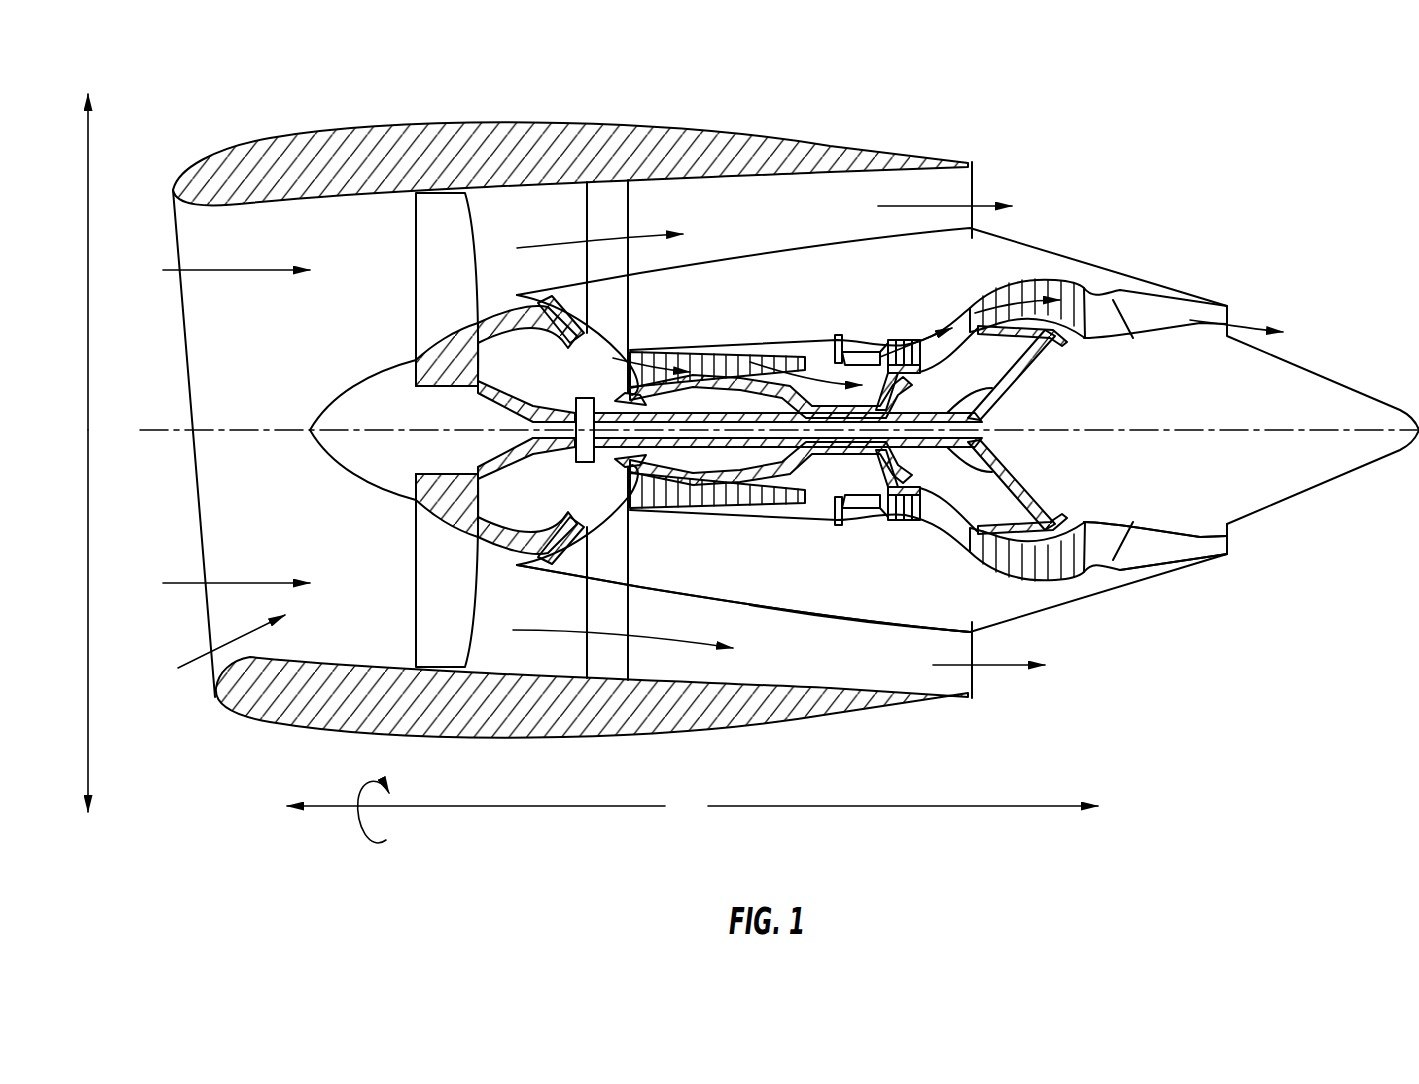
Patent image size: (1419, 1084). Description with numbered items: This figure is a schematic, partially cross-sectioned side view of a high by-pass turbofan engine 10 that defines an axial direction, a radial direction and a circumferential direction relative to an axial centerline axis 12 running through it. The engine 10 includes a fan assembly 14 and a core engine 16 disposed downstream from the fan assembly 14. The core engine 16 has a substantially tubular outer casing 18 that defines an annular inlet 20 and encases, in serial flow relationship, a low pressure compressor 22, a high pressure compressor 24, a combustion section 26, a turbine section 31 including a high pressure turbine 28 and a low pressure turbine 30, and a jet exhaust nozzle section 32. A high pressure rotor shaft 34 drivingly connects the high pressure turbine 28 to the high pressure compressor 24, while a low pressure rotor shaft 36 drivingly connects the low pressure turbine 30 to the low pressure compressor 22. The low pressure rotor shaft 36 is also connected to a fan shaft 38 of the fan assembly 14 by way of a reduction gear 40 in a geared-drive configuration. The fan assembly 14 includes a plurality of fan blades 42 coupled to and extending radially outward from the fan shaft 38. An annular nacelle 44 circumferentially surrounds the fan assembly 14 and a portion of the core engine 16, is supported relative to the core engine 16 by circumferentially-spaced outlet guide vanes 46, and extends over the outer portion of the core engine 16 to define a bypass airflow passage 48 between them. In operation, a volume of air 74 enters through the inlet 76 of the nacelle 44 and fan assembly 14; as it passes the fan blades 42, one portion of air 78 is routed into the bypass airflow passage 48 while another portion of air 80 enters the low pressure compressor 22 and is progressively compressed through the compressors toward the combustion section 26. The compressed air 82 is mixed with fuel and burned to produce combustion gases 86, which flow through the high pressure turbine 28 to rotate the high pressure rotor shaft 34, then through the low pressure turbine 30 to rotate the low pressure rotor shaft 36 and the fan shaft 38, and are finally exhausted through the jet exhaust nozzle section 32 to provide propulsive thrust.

The high by-pass turbofan engine 10 is at (744, 473).
The axial centerline axis 12 is at (1160, 425).
The fan assembly 14 is at (437, 362).
The core engine 16 is at (925, 395).
The outer casing 18 is at (810, 617).
The annular inlet 20 is at (520, 552).
The low pressure compressor 22 is at (577, 522).
The high pressure compressor 24 is at (663, 490).
The combustion section 26 is at (858, 497).
The high pressure turbine 28 is at (918, 510).
The low pressure turbine 30 is at (1070, 583).
The turbine section 31 is at (922, 537).
The jet exhaust nozzle section 32 is at (1133, 550).
The high pressure rotor shaft 34 is at (890, 398).
The low pressure rotor shaft 36 is at (990, 388).
The fan shaft 38 is at (480, 388).
The reduction gear 40 is at (580, 392).
The fan blades 42 is at (433, 225).
The nacelle 44 is at (420, 127).
The outlet guide vanes 46 is at (620, 208).
The bypass airflow passage 48 is at (752, 228).
The air 74 is at (210, 275).
The inlet 76 is at (217, 651).
The bypass air 78 is at (573, 236).
The core air 80 is at (507, 308).
The compressed air 82 is at (637, 363).
The combustion gases 86 is at (912, 345).